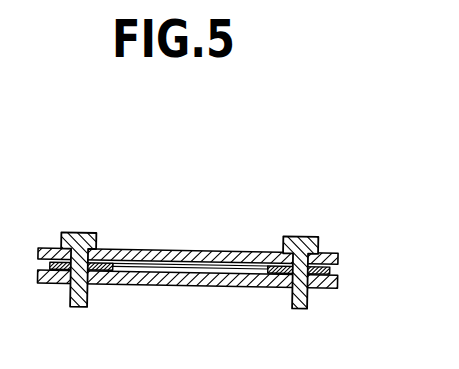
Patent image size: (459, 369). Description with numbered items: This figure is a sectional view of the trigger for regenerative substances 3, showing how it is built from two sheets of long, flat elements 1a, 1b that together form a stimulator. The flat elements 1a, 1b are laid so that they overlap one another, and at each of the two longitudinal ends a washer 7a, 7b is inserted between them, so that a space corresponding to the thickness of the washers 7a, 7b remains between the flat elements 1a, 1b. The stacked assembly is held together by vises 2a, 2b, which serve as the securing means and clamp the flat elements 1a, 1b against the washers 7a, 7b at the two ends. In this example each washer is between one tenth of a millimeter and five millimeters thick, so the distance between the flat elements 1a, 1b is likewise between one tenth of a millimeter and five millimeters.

The trigger for regenerative substances 3 is at (304, 137).
The flat element 1a is at (174, 248).
The flat element 1b is at (186, 285).
The vise 2a is at (75, 232).
The vise 2b is at (305, 238).
The washer 7a is at (55, 286).
The washer 7b is at (331, 269).